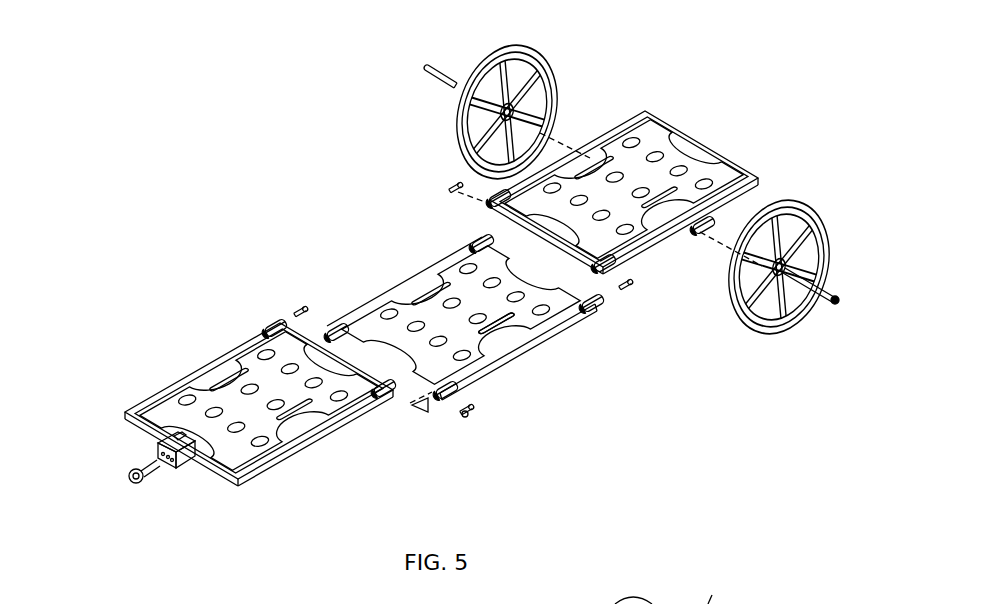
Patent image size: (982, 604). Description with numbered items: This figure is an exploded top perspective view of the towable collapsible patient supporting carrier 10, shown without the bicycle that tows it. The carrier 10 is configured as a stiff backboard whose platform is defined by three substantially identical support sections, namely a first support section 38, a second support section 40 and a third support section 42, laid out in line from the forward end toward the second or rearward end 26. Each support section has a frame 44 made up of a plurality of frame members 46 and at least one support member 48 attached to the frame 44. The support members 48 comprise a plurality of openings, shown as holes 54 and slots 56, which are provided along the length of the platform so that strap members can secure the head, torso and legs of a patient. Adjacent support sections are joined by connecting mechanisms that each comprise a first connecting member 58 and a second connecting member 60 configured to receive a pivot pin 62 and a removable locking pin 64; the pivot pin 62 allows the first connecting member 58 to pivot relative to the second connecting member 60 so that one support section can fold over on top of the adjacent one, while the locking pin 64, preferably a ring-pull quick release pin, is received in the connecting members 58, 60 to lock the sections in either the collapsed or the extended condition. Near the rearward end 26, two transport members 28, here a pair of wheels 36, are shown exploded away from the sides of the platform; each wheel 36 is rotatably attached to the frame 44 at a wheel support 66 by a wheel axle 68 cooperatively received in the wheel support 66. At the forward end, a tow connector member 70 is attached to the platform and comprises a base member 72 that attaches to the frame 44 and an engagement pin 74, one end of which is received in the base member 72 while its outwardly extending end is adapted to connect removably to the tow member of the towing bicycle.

The patient supporting carrier 10 is at (158, 128).
The second or rearward end 26 is at (710, 600).
The transport members 28 is at (822, 185).
The wheels 36 is at (654, 173).
The first support section 38 is at (259, 395).
The second support section 40 is at (476, 304).
The third support section 42 is at (664, 327).
The frame 44 is at (309, 452).
The frame members 46 is at (520, 350).
The support member 48 is at (653, 138).
The holes 54 is at (461, 315).
The slots 56 is at (517, 320).
The first connecting member 58 is at (386, 396).
The second connecting member 60 is at (440, 403).
The pivot pin 62 is at (474, 412).
The locking pin 64 is at (466, 418).
The wheel support 66 is at (705, 231).
The wheel axle 68 is at (437, 78).
The tow connector member 70 is at (161, 500).
The base member 72 is at (187, 462).
The engagement pin 74 is at (140, 484).